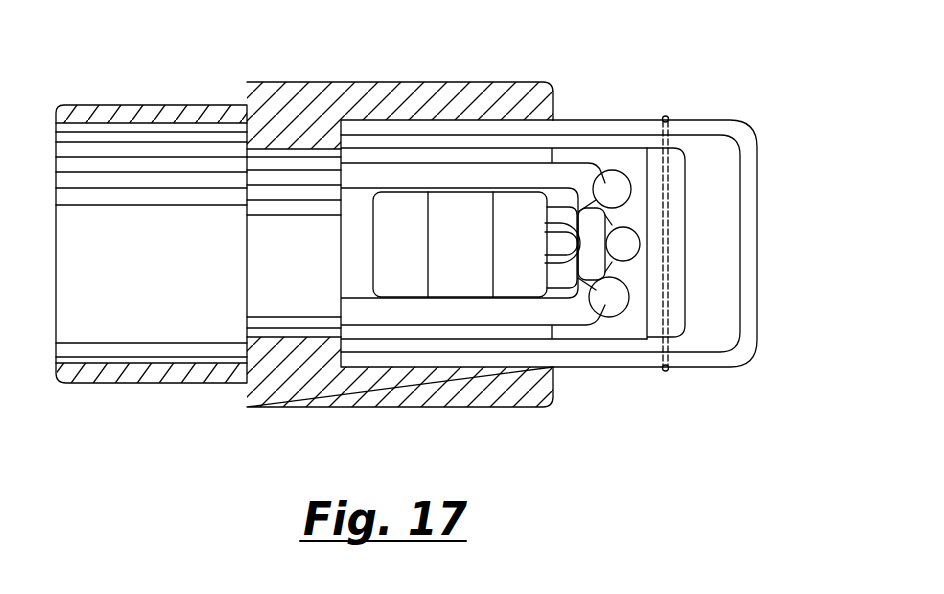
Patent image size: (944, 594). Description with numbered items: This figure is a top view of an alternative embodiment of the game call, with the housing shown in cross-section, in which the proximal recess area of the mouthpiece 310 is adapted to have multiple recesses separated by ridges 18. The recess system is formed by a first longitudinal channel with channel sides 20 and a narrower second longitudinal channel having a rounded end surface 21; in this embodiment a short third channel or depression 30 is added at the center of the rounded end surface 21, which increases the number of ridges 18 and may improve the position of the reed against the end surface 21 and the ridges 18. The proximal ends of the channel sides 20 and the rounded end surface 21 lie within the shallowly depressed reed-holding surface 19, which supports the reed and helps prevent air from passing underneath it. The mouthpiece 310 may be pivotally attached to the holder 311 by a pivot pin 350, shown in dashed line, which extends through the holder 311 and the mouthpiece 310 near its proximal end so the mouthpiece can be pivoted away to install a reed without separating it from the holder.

The ridges 18 is at (610, 172).
The reed-holding surface 19 is at (627, 318).
The channel sides 20 is at (432, 180).
The rounded end surface 21 is at (603, 185).
The depression 30 is at (630, 243).
The mouthpiece 310 is at (576, 112).
The holder 311 is at (677, 362).
The pivot pin 350 is at (672, 158).